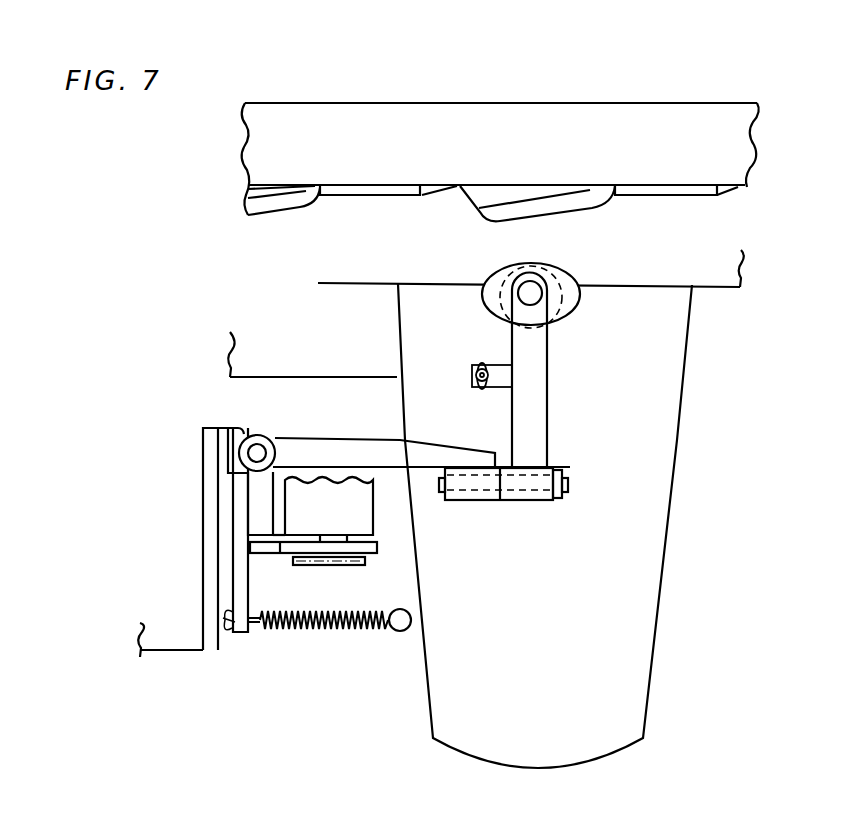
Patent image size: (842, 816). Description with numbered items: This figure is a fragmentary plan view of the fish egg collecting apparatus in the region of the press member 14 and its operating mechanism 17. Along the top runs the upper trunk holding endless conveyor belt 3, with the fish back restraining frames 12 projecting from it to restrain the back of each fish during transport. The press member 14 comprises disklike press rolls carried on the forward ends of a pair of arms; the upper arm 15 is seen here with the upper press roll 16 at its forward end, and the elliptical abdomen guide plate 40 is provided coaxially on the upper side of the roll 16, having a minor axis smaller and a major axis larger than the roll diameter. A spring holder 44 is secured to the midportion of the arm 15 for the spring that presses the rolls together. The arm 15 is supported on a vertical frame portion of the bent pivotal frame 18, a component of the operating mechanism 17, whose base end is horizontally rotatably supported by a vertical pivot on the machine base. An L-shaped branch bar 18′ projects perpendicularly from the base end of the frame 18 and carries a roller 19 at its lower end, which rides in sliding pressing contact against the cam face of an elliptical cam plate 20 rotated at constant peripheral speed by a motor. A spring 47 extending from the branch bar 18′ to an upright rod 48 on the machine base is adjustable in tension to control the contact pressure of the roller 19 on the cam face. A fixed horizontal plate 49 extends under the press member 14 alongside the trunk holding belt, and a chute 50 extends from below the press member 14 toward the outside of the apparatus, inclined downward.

The upper trunk holding endless conveyor belt 3 is at (555, 127).
The fish back restraining frame 12 is at (303, 213).
The press member 14 is at (556, 343).
The upper arm 15 is at (533, 413).
The upper press roll 16 is at (565, 323).
The operating mechanism 17 is at (204, 422).
The pivotal frame 18 is at (325, 452).
The L-shaped branch bar 18′ is at (258, 500).
The roller 19 is at (268, 553).
The elliptical cam plate 20 is at (372, 549).
The abdomen guide plate 40 is at (576, 315).
The spring holder 44 is at (498, 375).
The spring 47 is at (313, 628).
The rod 48 is at (399, 631).
The fixed horizontal plate 49 is at (698, 270).
The chute 50 is at (623, 593).